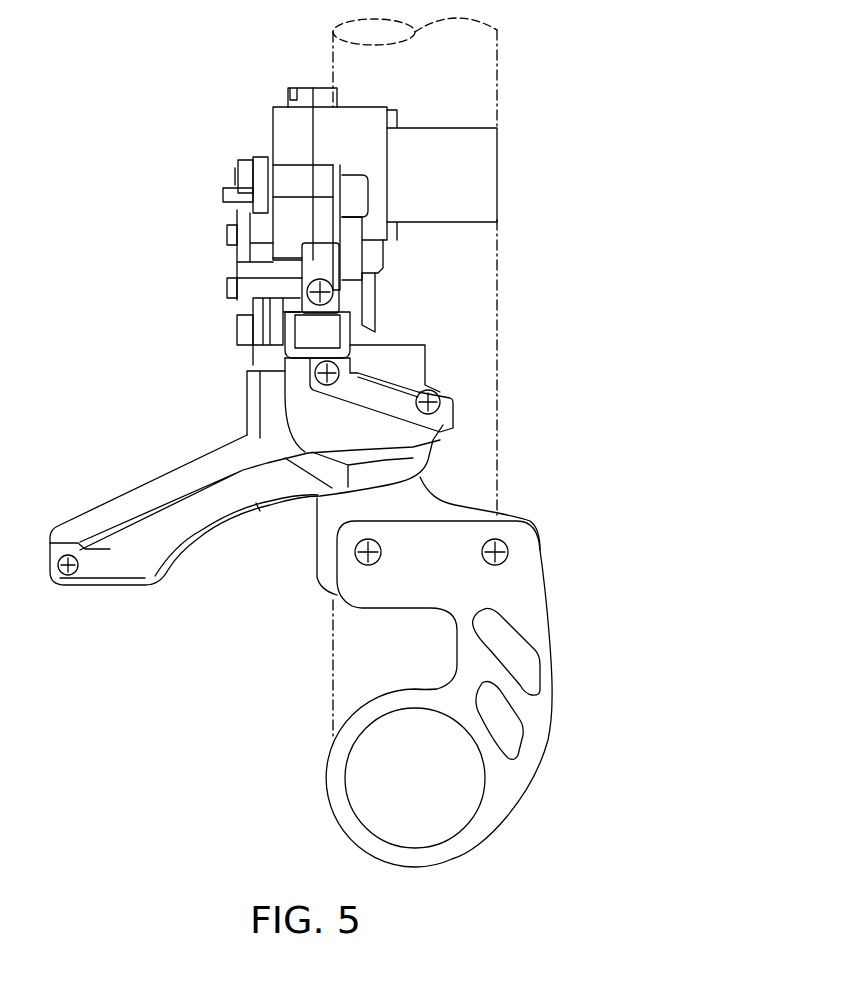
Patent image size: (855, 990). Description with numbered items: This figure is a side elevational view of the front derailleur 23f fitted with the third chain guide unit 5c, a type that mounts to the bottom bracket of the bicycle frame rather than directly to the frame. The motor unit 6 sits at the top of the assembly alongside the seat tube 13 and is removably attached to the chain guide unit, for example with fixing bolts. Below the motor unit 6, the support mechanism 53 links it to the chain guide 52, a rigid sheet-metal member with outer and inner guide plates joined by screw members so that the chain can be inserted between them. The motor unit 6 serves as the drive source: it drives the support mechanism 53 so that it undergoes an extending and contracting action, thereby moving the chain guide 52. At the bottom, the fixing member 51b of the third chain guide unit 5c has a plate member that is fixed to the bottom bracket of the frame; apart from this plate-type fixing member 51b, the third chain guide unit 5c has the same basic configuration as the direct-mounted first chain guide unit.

The seat tube 13 is at (478, 80).
The motor unit 6 is at (498, 147).
The front derailleur 23f is at (153, 125).
The support mechanism 53 is at (227, 306).
The third chain guide unit 5c is at (463, 382).
The chain guide 52 is at (140, 480).
The fixing member 51b is at (532, 515).